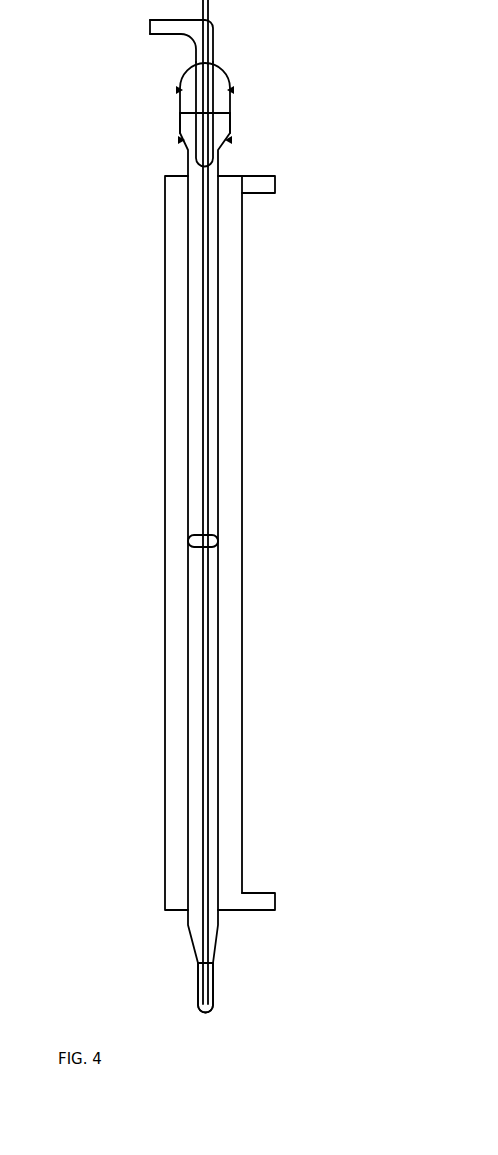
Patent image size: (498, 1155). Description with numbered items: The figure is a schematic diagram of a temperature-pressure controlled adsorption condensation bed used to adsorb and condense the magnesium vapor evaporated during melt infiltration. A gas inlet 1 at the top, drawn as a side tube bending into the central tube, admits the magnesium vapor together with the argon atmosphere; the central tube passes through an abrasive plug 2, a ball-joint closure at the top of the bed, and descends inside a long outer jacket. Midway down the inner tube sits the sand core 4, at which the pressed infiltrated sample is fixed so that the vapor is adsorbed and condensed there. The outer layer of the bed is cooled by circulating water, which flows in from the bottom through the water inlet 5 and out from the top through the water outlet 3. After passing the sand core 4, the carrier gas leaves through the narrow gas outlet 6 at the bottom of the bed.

The gas inlet 1 is at (167, 33).
The abrasive plug 2 is at (230, 106).
The water outlet 3 is at (277, 183).
The sand core 4 is at (220, 538).
The water inlet 5 is at (268, 893).
The gas outlet 6 is at (214, 988).